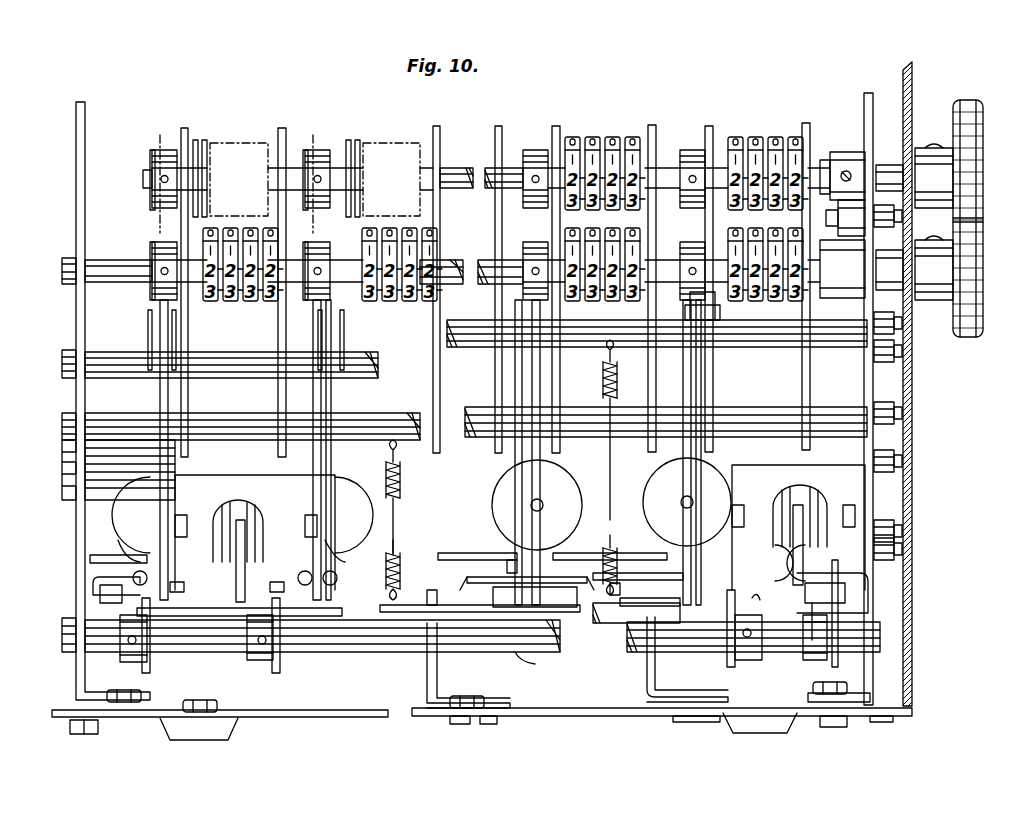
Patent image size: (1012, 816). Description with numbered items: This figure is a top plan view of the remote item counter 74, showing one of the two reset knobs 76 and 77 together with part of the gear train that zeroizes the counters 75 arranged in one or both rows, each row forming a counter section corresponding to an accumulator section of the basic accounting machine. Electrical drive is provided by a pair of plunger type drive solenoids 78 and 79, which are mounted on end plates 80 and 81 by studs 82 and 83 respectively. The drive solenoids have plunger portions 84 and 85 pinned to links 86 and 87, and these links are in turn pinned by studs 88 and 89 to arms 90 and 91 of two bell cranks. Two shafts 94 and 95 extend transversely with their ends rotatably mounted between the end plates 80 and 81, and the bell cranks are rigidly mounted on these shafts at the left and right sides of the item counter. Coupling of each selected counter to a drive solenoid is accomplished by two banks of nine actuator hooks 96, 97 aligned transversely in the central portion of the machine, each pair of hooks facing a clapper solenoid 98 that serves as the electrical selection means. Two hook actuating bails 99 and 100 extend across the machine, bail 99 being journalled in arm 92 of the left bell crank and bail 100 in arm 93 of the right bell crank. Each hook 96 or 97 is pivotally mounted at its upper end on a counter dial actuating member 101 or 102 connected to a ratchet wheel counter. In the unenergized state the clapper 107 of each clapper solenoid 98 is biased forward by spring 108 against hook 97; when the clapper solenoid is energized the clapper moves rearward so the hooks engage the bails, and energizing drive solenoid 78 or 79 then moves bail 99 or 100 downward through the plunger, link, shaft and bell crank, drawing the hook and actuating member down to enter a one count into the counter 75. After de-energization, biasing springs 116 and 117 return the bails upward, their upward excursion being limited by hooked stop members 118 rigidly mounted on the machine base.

The remote item counter 74 is at (522, 720).
The counters 75 is at (585, 138).
The reset knob 76 is at (968, 98).
The reset knob 77 is at (966, 340).
The drive solenoid 78 is at (195, 478).
The drive solenoid 79 is at (795, 470).
The end plate 80 is at (78, 524).
The end plate 81 is at (880, 497).
The stud 82 is at (70, 446).
The stud 83 is at (896, 458).
The plunger portion 84 is at (232, 522).
The plunger portion 85 is at (822, 512).
The link 86 is at (250, 518).
The link 87 is at (820, 575).
The stud 88 is at (245, 590).
The stud 89 is at (818, 630).
The bell crank arm 90 is at (285, 652).
The bell crank arm 91 is at (835, 598).
The bell crank arm 92 is at (148, 660).
The bell crank arm 93 is at (730, 662).
The shaft 94 is at (102, 652).
The shaft 95 is at (525, 656).
The actuator hook 96 is at (142, 556).
The actuator hook 97 is at (165, 130).
The clapper solenoid 98 is at (492, 493).
The hook actuating bail 99 is at (202, 620).
The hook actuating bail 100 is at (468, 598).
The counter dial actuating member 101 is at (280, 326).
The counter dial actuating member 102 is at (283, 130).
The clapper 107 is at (150, 330).
The spring 108 is at (180, 580).
The biasing spring 116 is at (400, 490).
The biasing spring 117 is at (605, 388).
The hooked stop member 118 is at (437, 672).